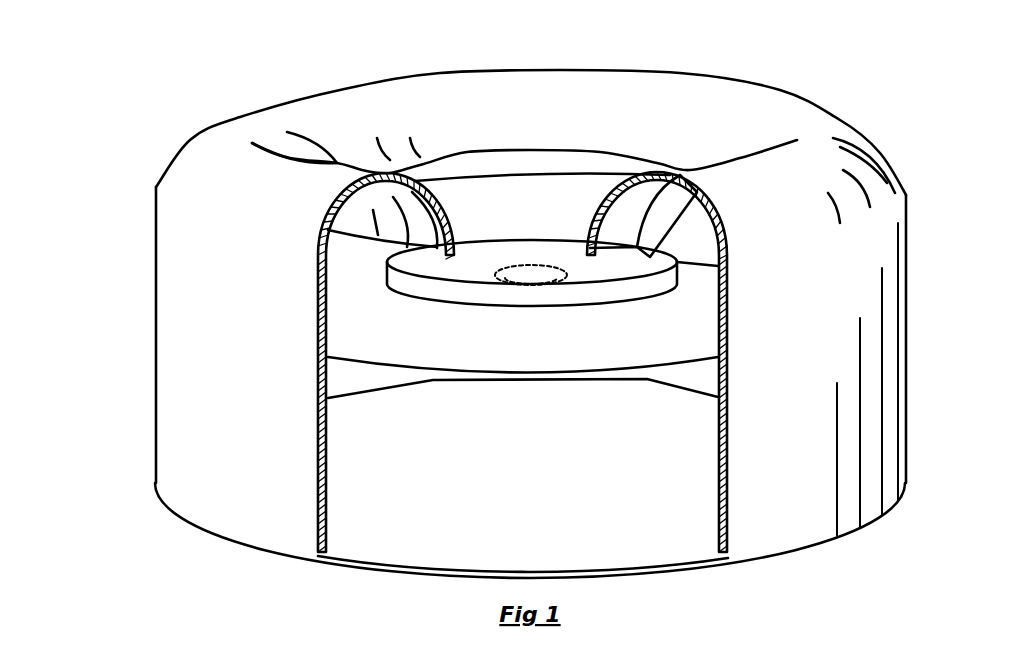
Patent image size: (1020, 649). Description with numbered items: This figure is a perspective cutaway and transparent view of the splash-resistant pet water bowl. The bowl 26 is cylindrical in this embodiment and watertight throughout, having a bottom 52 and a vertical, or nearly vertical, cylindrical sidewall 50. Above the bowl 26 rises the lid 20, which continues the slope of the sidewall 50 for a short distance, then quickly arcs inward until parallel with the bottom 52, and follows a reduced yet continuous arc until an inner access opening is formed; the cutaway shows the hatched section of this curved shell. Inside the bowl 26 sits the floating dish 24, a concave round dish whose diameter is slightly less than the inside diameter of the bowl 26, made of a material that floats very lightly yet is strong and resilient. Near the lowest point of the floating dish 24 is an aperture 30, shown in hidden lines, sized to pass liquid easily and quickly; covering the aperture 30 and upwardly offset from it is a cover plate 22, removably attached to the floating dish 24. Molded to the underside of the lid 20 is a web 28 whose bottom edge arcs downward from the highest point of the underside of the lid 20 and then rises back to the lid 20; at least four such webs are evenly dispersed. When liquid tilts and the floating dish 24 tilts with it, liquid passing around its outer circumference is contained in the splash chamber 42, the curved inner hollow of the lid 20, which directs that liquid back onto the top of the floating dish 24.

The lid 20 is at (205, 163).
The cover plate 22 is at (430, 270).
The floating dish 24 is at (370, 325).
The bowl 26 is at (212, 440).
The web 28 is at (673, 212).
The aperture 30 is at (525, 272).
The splash chamber 42 is at (383, 213).
The sidewall 50 is at (225, 522).
The bottom 52 is at (430, 507).